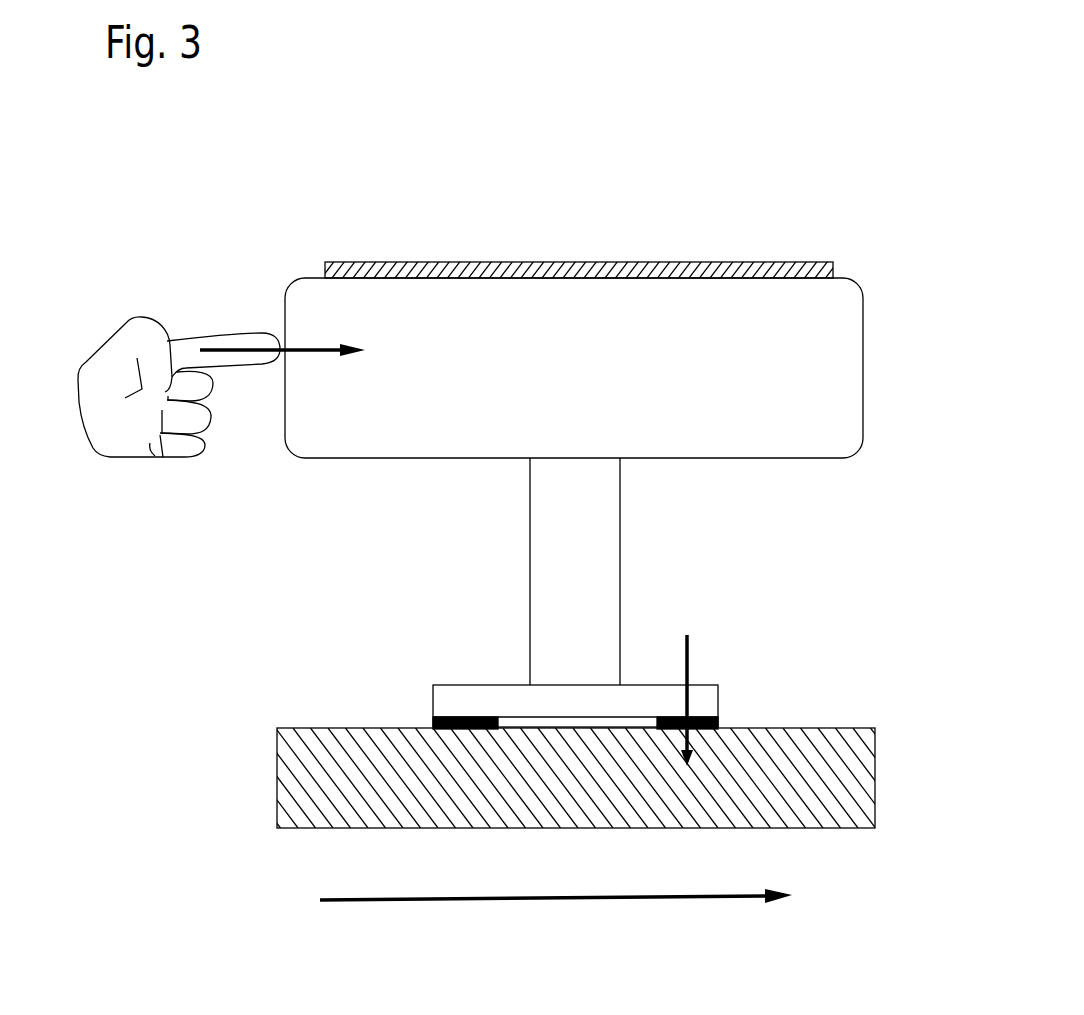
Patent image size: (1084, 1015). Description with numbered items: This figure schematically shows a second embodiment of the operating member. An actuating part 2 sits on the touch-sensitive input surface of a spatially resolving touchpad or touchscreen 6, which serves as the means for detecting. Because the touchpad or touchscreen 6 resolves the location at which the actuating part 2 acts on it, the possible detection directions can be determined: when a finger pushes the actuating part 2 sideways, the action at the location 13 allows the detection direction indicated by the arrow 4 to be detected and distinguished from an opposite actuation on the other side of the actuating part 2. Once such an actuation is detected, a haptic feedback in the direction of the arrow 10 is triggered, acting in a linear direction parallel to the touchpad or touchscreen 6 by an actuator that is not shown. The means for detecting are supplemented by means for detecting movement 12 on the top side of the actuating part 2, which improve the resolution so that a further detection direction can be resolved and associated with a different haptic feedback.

The actuating part 2 is at (850, 355).
The arrow 4 is at (303, 341).
The touchpad or touchscreen 6 is at (862, 773).
The arrow 10 is at (497, 905).
The means for detecting movement 12 is at (546, 262).
The location 13 is at (690, 653).